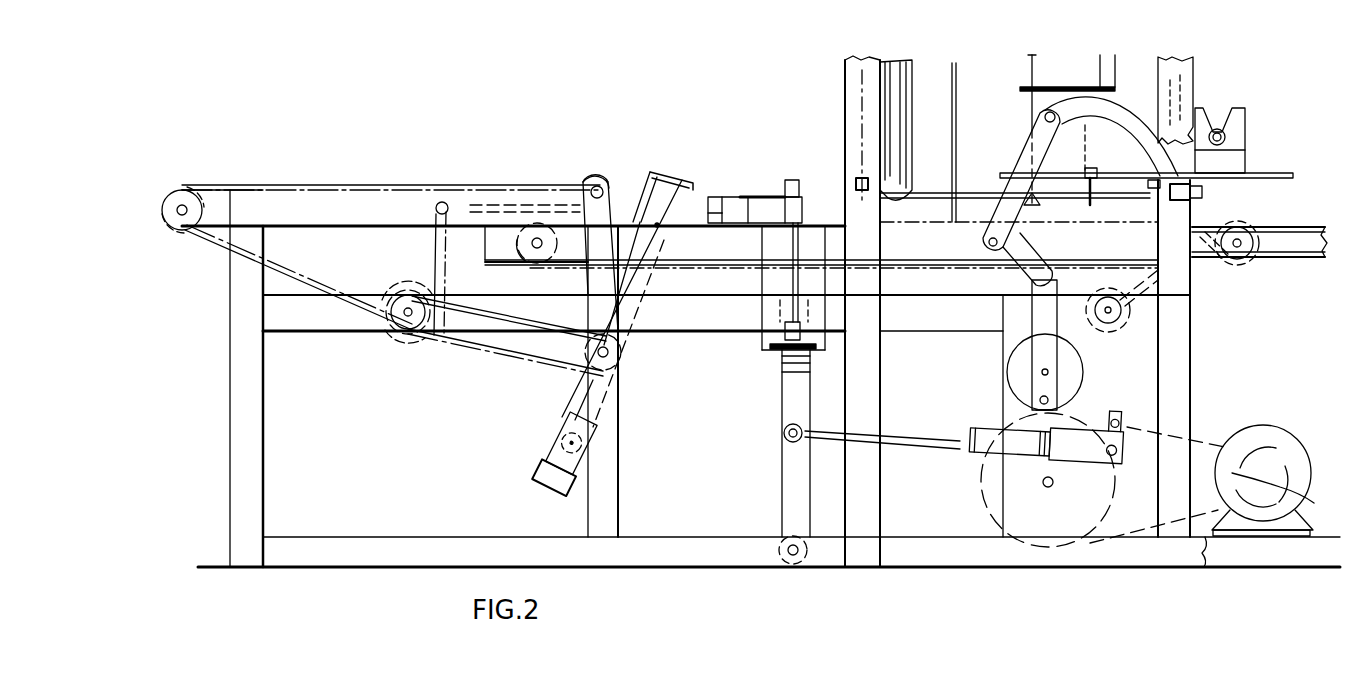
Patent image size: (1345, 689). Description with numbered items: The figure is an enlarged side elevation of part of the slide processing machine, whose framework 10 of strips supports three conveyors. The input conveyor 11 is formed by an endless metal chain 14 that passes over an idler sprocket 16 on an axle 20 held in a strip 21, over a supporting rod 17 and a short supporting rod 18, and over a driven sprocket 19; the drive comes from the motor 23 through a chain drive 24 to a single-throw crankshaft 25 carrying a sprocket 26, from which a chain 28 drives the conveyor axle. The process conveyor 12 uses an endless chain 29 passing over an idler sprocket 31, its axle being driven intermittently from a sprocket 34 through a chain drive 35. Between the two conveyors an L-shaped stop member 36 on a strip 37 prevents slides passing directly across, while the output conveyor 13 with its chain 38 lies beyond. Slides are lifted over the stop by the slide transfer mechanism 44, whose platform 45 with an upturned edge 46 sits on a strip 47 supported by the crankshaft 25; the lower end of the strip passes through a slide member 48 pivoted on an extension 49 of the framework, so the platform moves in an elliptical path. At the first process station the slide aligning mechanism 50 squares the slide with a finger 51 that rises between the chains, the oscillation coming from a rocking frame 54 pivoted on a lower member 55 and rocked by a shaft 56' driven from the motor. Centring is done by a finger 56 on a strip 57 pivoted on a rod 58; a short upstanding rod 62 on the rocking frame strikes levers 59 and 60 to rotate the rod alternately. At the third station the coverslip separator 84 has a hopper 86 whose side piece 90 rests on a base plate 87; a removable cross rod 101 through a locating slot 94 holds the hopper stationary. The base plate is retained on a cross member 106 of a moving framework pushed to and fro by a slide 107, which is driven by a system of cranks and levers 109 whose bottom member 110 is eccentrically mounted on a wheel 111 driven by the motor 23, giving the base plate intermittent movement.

The framework 10 is at (226, 463).
The input conveyor 11 is at (355, 184).
The process conveyor 12 is at (829, 223).
The output conveyor 13 is at (1304, 224).
The endless metal chain 14 is at (212, 250).
The idler sprocket 16 is at (166, 202).
The supporting rod 17 is at (438, 200).
The short supporting rod 18 is at (594, 188).
The driven sprocket 19 is at (400, 295).
The axle 20 is at (182, 216).
The strip 21 is at (222, 200).
The motor 23 is at (1276, 530).
The chain drive 24 is at (1253, 553).
The single-throw crankshaft 25 is at (612, 352).
The sprocket 26 is at (616, 363).
The chain 28 is at (480, 358).
The endless metal chain 29 is at (708, 216).
The idler sprocket 31 is at (528, 210).
The sprocket 34 is at (1118, 326).
The chain drive 35 is at (1217, 268).
The L-shaped stop member 36 is at (612, 188).
The strip 37 is at (551, 243).
The endless metal chain 38 is at (1316, 258).
The slide transfer mechanism 44 is at (672, 176).
The platform 45 is at (660, 228).
The upturned edge 46 is at (686, 186).
The strip 47 is at (650, 278).
The slide member 48 is at (588, 436).
The extension 49 is at (552, 432).
The slide aligning mechanism 50 is at (769, 195).
The finger 51 is at (794, 180).
The rocking frame 54 is at (782, 489).
The lower member 55 is at (778, 549).
The finger 56 is at (706, 234).
The shaft 56' is at (965, 427).
The strip 57 is at (747, 223).
The rod 58 is at (792, 274).
The lever 59 is at (770, 348).
The lever 60 is at (862, 311).
The short upstanding rod 62 is at (784, 332).
The coverslip separator 84 is at (1250, 139).
The hopper 86 is at (1216, 147).
The base plate 87 is at (1288, 176).
The side piece 90 is at (1246, 156).
The locating slot 94 is at (1217, 108).
The removable cross rod 101 is at (1246, 126).
The cross member 106 is at (1090, 168).
The slide 107 is at (1188, 200).
The system of cranks and levers 109 is at (1007, 210).
The bottom member 110 is at (1054, 370).
The wheel 111 is at (1018, 372).